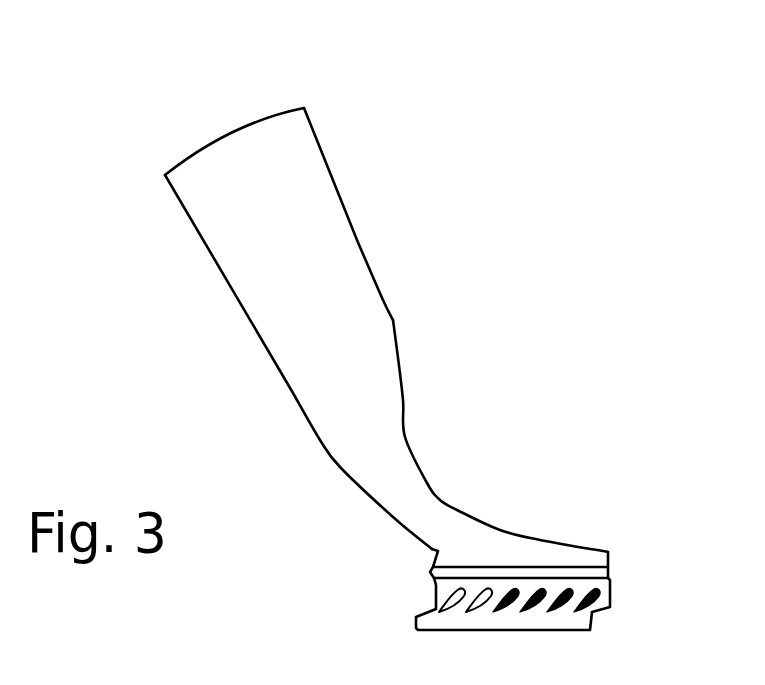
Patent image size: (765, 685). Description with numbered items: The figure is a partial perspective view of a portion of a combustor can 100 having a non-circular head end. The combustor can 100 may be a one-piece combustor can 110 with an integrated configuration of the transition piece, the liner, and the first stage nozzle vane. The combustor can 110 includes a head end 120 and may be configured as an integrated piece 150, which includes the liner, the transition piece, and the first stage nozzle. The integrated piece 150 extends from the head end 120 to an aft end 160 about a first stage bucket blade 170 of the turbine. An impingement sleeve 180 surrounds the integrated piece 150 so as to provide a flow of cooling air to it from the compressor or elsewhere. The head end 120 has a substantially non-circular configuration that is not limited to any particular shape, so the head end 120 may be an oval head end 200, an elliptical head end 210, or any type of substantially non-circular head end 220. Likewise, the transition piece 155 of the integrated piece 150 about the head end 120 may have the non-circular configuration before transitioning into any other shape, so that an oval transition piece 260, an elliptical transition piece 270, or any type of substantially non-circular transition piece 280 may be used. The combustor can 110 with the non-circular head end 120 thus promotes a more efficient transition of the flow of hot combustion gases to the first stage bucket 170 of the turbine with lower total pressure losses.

The combustor can 100 is at (380, 78).
The one-piece combustor can 110 is at (362, 235).
The head end 120 is at (304, 106).
The integrated piece 150 is at (368, 293).
The transition piece 155 is at (236, 302).
The aft end 160 is at (433, 567).
The first stage bucket blade 170 is at (600, 590).
The impingement sleeve 180 is at (411, 309).
The oval head end 200 is at (334, 138).
The elliptical head end 210 is at (334, 138).
The substantially non-circular head end 220 is at (306, 109).
The oval transition piece 260 is at (249, 362).
The elliptical transition piece 270 is at (249, 362).
The substantially non-circular transition piece 280 is at (196, 232).